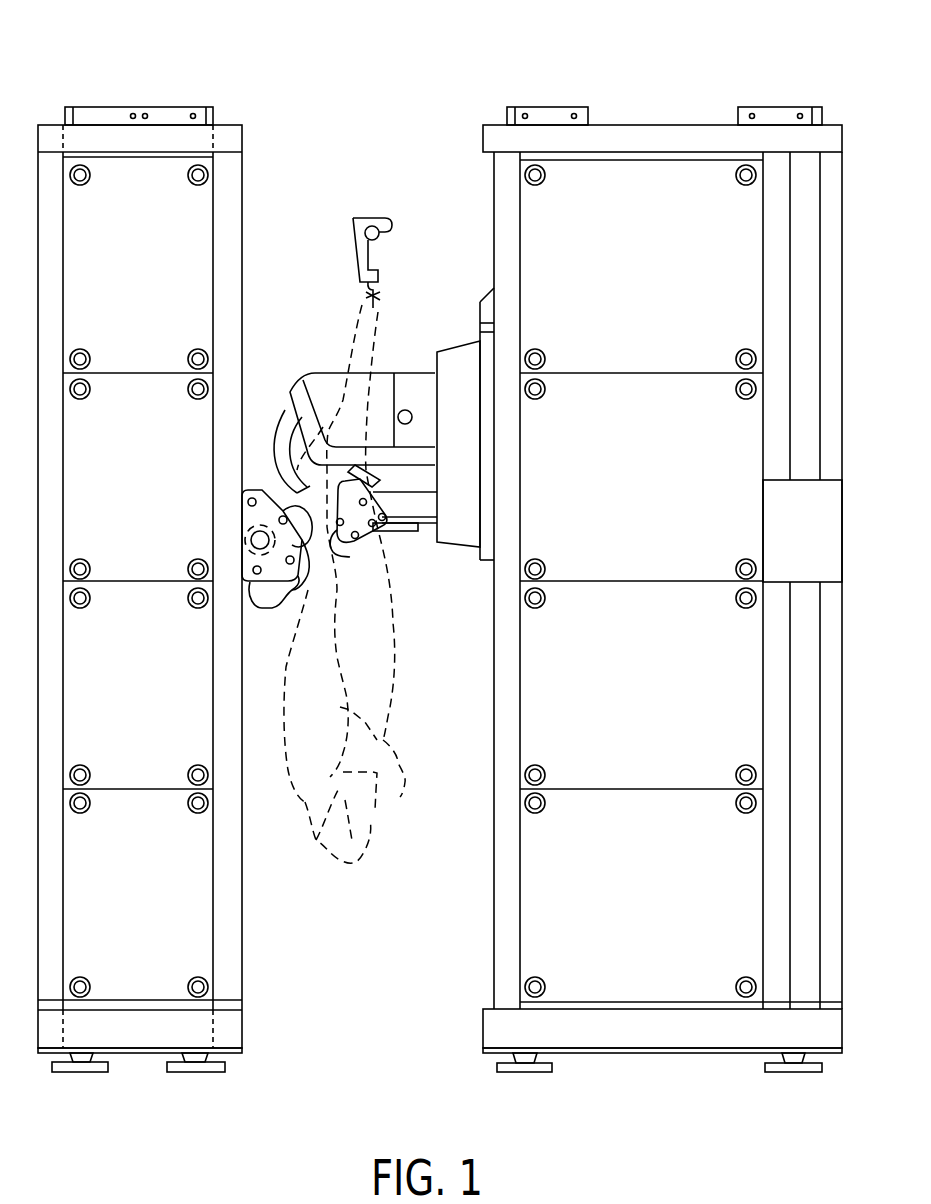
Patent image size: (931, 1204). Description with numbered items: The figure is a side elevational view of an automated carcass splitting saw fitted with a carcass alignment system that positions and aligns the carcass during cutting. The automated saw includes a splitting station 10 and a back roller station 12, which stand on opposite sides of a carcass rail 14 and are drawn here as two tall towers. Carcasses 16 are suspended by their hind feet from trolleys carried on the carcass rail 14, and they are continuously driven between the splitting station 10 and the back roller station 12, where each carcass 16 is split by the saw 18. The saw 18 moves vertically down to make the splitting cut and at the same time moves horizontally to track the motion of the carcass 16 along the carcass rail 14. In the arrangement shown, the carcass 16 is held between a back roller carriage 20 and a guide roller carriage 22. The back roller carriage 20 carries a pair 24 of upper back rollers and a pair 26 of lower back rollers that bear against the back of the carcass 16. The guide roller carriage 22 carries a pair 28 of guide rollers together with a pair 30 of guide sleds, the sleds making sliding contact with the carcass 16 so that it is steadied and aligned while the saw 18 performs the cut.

The splitting station 10 is at (690, 78).
The back roller station 12 is at (118, 79).
The carcass rail 14 is at (372, 216).
The carcass 16 is at (370, 832).
The saw 18 is at (274, 416).
The back roller carriage 20 is at (250, 590).
The guide roller carriage 22 is at (397, 538).
The pair of upper back rollers 24 is at (276, 494).
The pair of lower back rollers 26 is at (290, 588).
The pair of guide rollers 28 is at (375, 468).
The pair of guide sleds 30 is at (339, 548).